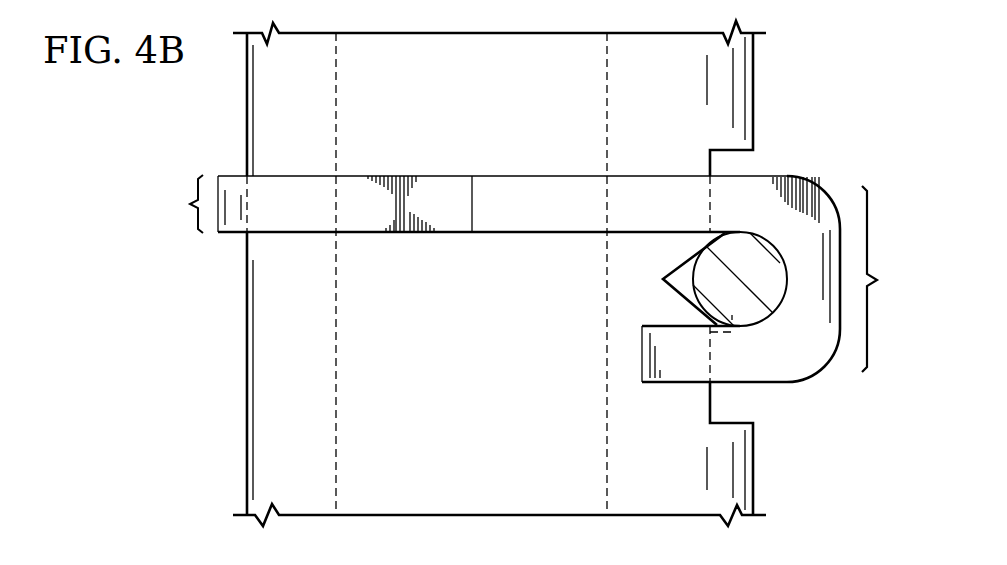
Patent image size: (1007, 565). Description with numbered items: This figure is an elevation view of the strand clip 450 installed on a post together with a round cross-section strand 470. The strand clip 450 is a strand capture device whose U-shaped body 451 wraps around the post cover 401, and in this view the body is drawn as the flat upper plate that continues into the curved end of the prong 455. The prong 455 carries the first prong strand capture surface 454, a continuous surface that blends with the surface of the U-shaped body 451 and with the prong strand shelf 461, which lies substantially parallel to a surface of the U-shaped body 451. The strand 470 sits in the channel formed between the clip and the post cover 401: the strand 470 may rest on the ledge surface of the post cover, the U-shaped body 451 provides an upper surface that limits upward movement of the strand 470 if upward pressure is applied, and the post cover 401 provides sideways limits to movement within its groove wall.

The post cover 401 is at (753, 90).
The strand clip 450 is at (313, 169).
The U-shaped body 451 is at (170, 204).
The first prong strand capture surface 454 is at (787, 262).
The prong 455 is at (849, 279).
The prong strand shelf 461 is at (672, 325).
The strand 470 is at (757, 312).